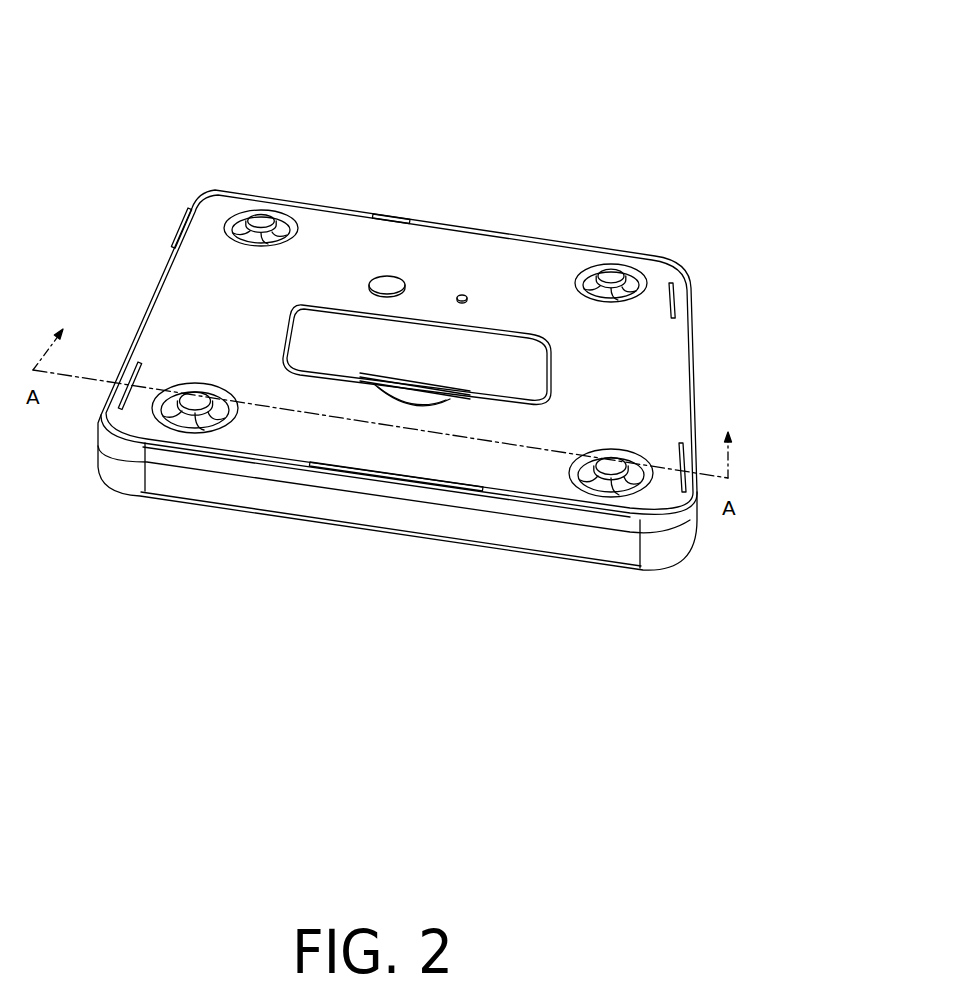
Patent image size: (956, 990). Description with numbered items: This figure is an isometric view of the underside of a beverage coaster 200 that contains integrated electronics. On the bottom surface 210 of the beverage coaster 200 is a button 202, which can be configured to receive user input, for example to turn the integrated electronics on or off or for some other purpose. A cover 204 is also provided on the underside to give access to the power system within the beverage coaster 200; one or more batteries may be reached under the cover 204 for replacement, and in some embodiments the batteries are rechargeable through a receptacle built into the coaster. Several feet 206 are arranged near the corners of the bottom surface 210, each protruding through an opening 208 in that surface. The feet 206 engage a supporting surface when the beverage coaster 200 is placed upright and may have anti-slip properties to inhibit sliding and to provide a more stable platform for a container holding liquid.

The beverage coaster 200 is at (541, 56).
The button 202 is at (393, 282).
The cover 204 is at (498, 363).
The feet 206 is at (614, 272).
The opening 208 is at (646, 276).
The bottom surface 210 is at (639, 414).